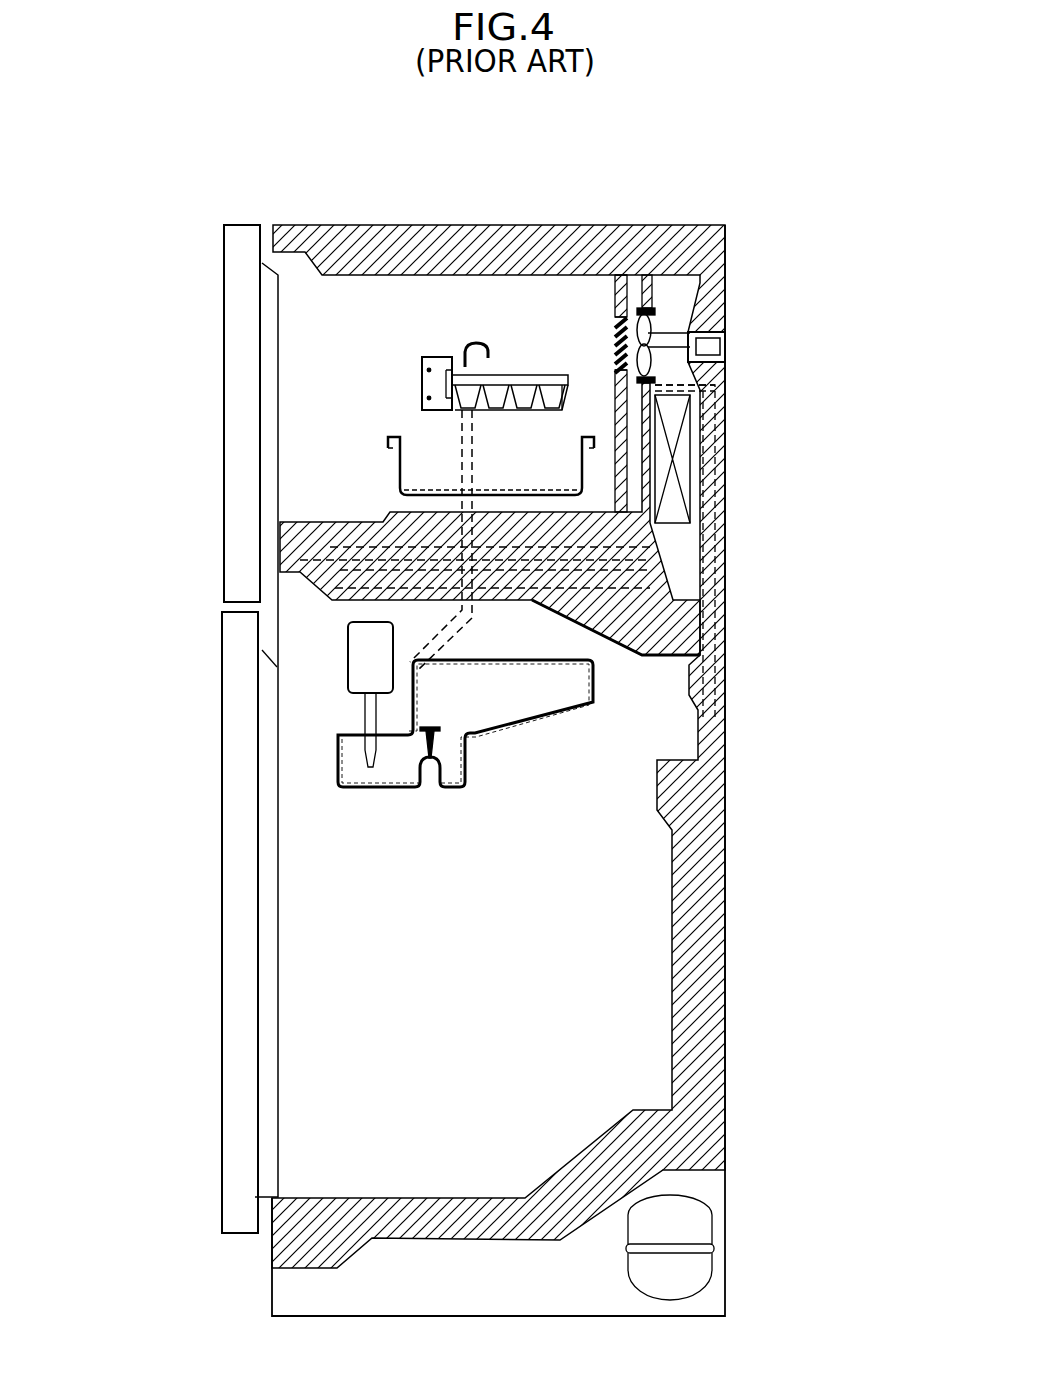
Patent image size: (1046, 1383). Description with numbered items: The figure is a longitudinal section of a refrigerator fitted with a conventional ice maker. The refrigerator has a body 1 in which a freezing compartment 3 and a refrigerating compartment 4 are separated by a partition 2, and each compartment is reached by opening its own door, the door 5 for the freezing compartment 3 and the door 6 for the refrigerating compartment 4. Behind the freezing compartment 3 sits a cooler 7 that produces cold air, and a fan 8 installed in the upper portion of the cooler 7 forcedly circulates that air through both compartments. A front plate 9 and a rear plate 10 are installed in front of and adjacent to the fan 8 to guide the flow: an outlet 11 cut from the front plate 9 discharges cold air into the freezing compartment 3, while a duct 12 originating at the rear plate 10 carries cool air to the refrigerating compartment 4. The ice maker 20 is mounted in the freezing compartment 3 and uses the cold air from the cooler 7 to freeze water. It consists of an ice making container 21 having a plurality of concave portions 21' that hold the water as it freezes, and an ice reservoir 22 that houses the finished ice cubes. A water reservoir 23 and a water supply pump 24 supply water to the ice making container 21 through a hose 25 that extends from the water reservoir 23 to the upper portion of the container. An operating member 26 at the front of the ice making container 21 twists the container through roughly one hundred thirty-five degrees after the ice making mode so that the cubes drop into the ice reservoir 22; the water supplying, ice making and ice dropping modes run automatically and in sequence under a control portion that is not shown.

The body 1 is at (742, 617).
The partition 2 is at (262, 545).
The freezing compartment 3 is at (361, 416).
The refrigerating compartment 4 is at (483, 936).
The door 5 is at (225, 313).
The door 6 is at (220, 885).
The cooler 7 is at (683, 450).
The fan 8 is at (725, 345).
The front plate 9 is at (612, 292).
The rear plate 10 is at (652, 299).
The outlet 11 is at (614, 330).
The duct 12 is at (715, 387).
The ice maker 20 is at (414, 298).
The ice making container 21 is at (510, 345).
The concave portions 21' is at (583, 369).
The ice reservoir 22 is at (392, 448).
The water reservoir 23 is at (565, 718).
The water supply pump 24 is at (355, 651).
The hose 25 is at (457, 637).
The operating member 26 is at (420, 357).